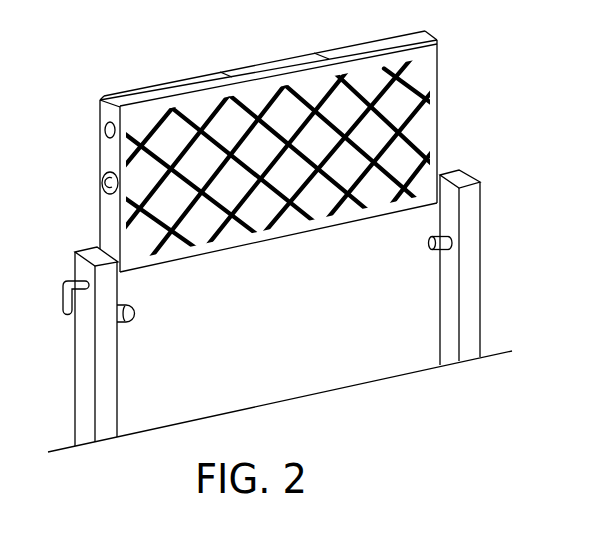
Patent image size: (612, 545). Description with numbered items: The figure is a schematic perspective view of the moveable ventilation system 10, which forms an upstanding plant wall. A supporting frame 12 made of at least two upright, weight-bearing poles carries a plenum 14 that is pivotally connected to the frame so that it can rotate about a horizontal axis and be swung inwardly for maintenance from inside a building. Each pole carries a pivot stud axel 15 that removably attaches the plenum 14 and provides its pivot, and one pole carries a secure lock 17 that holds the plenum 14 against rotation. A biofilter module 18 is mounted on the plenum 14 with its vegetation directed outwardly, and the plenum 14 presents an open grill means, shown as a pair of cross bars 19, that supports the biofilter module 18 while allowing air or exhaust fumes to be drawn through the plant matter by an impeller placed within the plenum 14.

The moveable ventilation system 10 is at (265, 151).
The supporting frame 12 is at (472, 202).
The plenum 14 is at (118, 108).
The pivot stud axel 15 is at (428, 245).
The secure lock 17 is at (62, 300).
The biofilter module 18 is at (100, 100).
The cross bars 19 is at (393, 88).